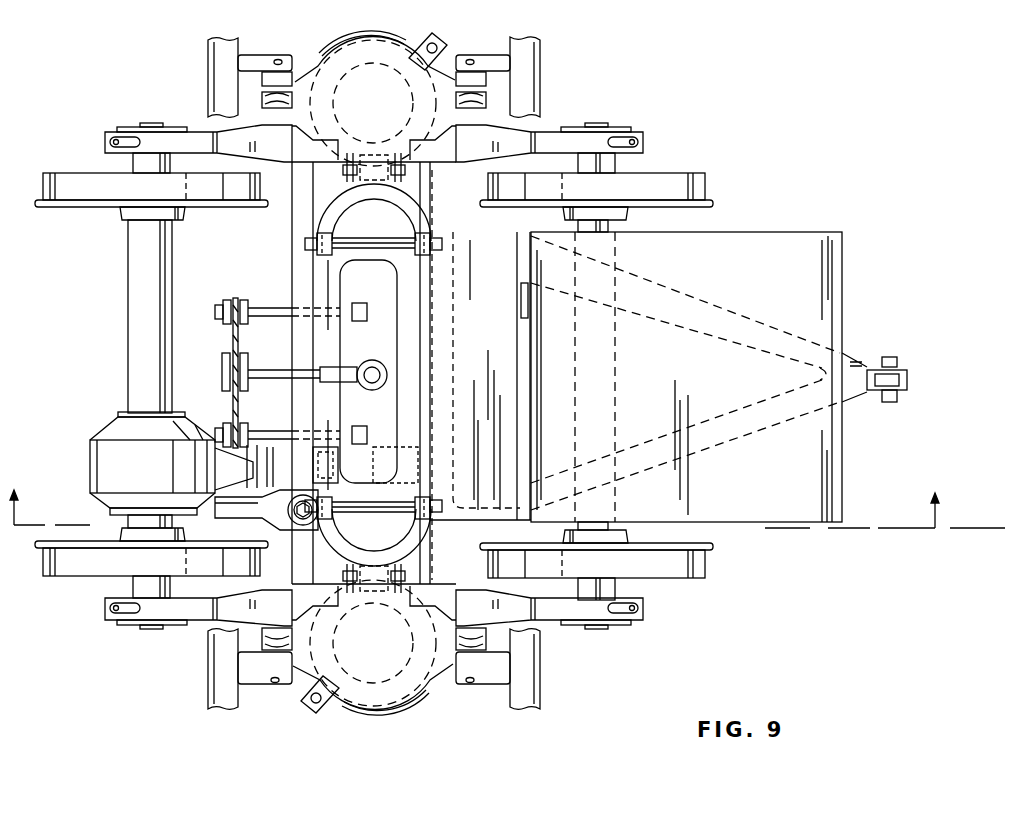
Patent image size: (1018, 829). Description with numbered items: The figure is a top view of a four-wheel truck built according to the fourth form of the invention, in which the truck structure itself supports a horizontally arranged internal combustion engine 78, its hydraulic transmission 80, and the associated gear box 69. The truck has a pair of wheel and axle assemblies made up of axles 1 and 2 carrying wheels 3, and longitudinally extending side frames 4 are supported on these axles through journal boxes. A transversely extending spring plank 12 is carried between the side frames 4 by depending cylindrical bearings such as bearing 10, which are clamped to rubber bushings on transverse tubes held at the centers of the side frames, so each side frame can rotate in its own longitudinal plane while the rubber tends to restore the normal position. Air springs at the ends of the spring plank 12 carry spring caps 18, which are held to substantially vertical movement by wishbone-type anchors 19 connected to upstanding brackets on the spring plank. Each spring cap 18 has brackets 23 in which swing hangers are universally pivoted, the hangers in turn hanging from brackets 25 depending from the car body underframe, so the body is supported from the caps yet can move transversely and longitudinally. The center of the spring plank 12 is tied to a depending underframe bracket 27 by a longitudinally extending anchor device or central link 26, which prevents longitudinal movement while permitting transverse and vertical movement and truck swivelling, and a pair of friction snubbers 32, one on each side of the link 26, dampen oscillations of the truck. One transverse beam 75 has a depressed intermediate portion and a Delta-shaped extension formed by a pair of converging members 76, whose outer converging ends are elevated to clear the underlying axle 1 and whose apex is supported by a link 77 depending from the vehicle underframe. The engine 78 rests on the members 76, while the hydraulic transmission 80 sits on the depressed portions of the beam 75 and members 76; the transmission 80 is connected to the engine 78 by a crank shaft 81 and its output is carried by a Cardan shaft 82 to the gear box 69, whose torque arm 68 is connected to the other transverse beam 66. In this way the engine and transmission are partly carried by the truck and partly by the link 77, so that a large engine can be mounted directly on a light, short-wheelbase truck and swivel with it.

The axle 1 is at (615, 392).
The axle 2 is at (127, 368).
The wheels 3 is at (42, 560).
The side frames 4 is at (523, 130).
The cylindrical bearing 10 is at (504, 497).
The spring plank 12 is at (396, 373).
The spring caps 18 is at (374, 373).
The anchors 19 is at (400, 207).
The brackets 23 is at (293, 668).
The brackets 25 is at (485, 688).
The anchor device 26 is at (268, 368).
The bracket 27 is at (233, 332).
The friction snubbers 32 is at (272, 303).
The transverse beam 66 is at (292, 247).
The torque arm 68 is at (262, 520).
The gear box 69 is at (181, 463).
The transverse beam 75 is at (456, 280).
The converging members 76 is at (705, 305).
The link 77 is at (907, 382).
The internal combustion engine 78 is at (843, 463).
The hydraulic transmission 80 is at (480, 376).
The crank shaft 81 is at (523, 312).
The Cardan shaft 82 is at (325, 470).